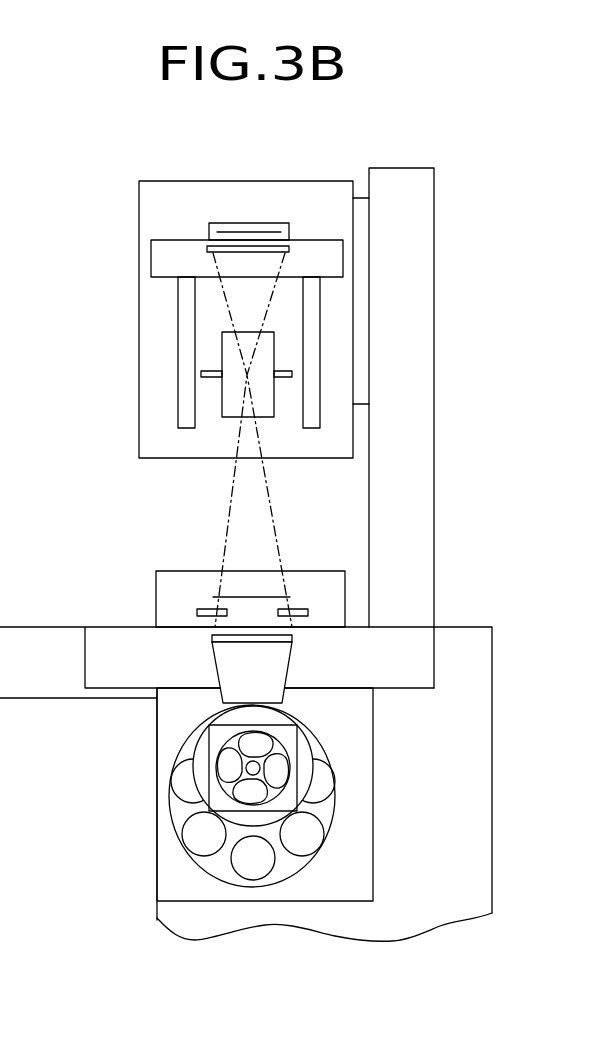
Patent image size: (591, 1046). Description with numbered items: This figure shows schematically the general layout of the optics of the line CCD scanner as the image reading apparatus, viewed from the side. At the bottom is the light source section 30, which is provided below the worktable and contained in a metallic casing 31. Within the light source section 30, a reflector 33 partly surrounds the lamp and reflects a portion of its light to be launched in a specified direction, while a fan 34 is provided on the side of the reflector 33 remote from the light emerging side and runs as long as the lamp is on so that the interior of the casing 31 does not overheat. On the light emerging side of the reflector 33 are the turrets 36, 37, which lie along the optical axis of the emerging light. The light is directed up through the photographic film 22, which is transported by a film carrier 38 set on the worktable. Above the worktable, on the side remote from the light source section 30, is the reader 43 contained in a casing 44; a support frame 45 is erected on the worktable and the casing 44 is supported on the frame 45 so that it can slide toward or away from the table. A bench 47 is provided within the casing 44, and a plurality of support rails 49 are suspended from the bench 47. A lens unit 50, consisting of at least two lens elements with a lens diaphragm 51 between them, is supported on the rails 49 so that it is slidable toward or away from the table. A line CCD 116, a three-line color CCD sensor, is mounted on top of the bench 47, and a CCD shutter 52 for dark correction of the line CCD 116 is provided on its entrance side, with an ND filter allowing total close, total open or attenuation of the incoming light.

The photographic film 22 is at (212, 598).
The light source section 30 is at (332, 797).
The casing 31 is at (362, 901).
The reflector 33 is at (307, 738).
The fan 34 is at (292, 798).
The turret 36 is at (377, 819).
The turret 37 is at (335, 826).
The film carrier 38 is at (161, 570).
The reader 43 is at (155, 436).
The casing 44 is at (138, 303).
The support frame 45 is at (420, 281).
The bench 47 is at (150, 265).
The support rails 49 is at (178, 345).
The lens unit 50 is at (268, 418).
The lens diaphragm 51 is at (197, 372).
The CCD shutter 52 is at (289, 247).
The line CCD 116 is at (255, 223).